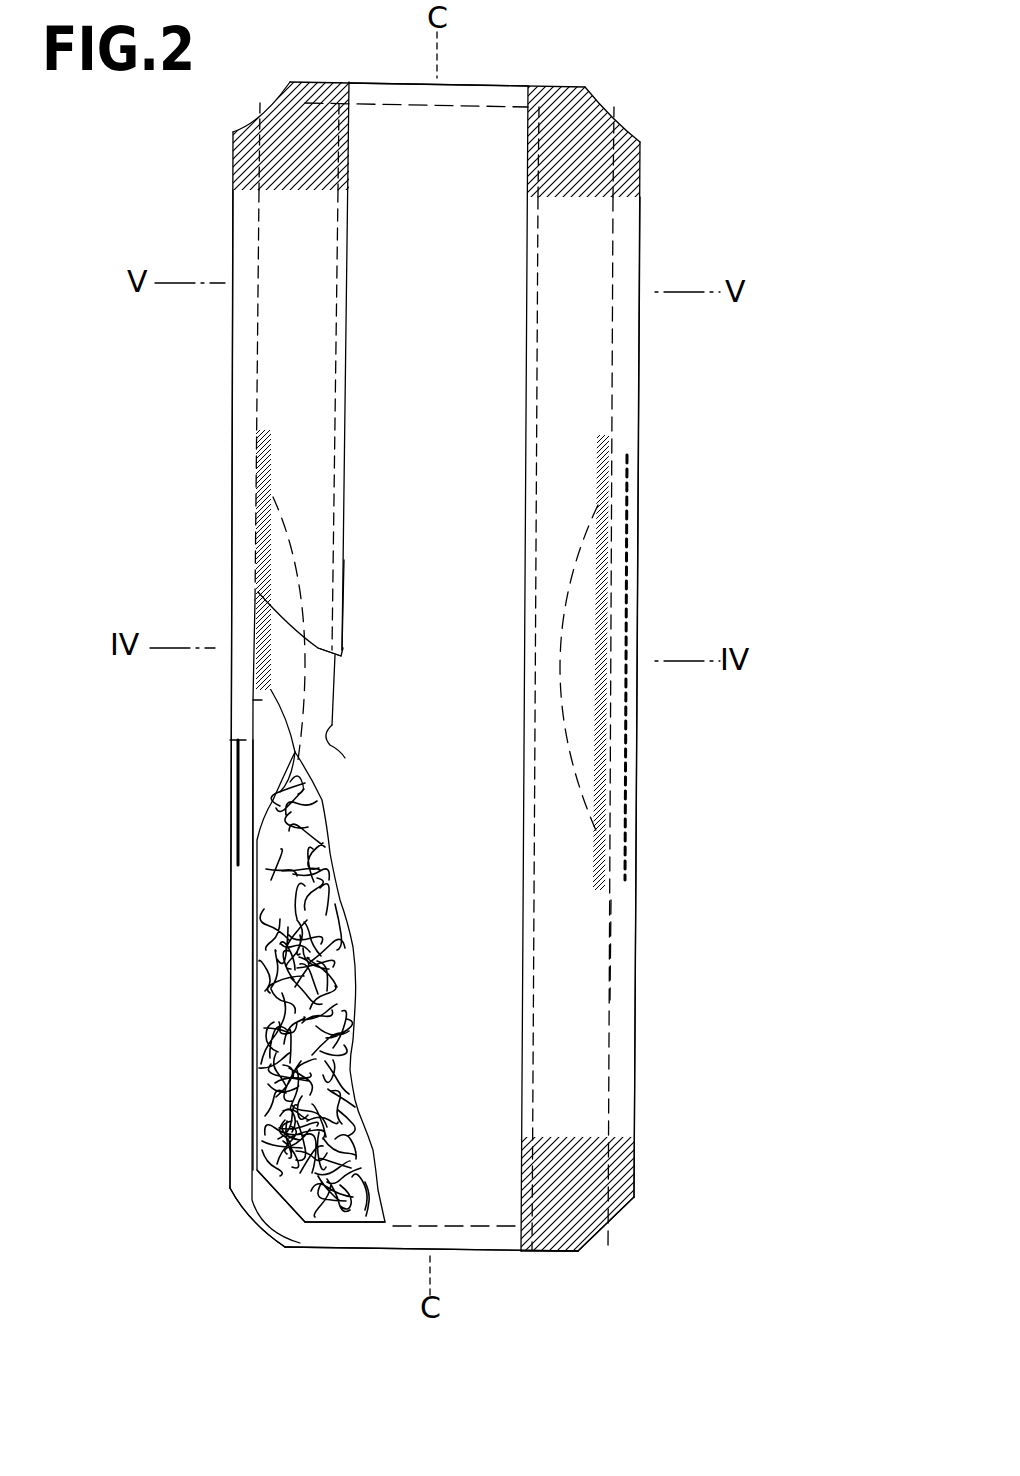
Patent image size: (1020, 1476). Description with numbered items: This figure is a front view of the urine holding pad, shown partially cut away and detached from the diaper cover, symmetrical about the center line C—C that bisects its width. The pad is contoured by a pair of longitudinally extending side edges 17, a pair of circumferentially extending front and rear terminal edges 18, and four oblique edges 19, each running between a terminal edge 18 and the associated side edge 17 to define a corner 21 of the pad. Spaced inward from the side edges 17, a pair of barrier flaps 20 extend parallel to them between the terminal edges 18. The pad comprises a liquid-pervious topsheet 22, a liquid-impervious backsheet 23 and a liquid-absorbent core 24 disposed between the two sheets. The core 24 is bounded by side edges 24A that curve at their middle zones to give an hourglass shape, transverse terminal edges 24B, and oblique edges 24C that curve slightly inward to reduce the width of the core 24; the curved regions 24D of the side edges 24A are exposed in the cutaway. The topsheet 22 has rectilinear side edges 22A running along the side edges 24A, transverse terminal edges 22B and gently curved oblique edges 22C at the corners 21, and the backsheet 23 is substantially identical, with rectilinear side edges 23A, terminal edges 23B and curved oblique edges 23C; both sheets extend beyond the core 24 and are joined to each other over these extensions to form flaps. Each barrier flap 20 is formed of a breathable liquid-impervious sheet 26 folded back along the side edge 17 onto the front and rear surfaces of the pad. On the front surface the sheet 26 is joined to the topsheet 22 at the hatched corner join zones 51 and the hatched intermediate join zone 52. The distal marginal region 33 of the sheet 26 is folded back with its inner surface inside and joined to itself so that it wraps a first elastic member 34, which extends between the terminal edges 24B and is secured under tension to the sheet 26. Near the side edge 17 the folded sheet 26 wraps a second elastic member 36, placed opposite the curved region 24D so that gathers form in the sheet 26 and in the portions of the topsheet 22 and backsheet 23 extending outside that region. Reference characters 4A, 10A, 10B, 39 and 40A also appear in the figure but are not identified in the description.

The hinge pin 4A is at (610, 958).
The lower blank portion 10A is at (268, 668).
The upper blank portion 10B is at (517, 95).
The side edges 17 is at (232, 340).
The front and rear terminal edges 18 is at (472, 85).
The oblique edges 19 is at (605, 118).
The barrier flaps 20 is at (350, 310).
The corner 21 is at (297, 140).
The liquid-pervious topsheet 22 is at (395, 1203).
The rectilinear side edges 22A is at (257, 618).
The terminal edges 22B is at (482, 1252).
The oblique edges 22C is at (597, 1220).
The liquid-impervious backsheet 23 is at (270, 726).
The rectilinear side edges 23A is at (250, 787).
The terminal edge 23B is at (548, 1252).
The oblique edges 23C is at (267, 1228).
The liquid-absorbent core 24 is at (276, 1024).
The side edges 24A is at (257, 1015).
The terminal edges 24B is at (292, 1246).
The oblique edges 24C is at (265, 1172).
The curved regions 24D is at (277, 790).
The breathable liquid-impervious sheet 26 is at (540, 415).
The distal marginal region 33 is at (323, 658).
The first elastic member 34 is at (351, 758).
The second elastic member 36 is at (235, 837).
The flap 39 is at (347, 595).
The flap edge 40A is at (346, 634).
The corner join zones 51 is at (325, 165).
The intermediate join zone 52 is at (265, 522).